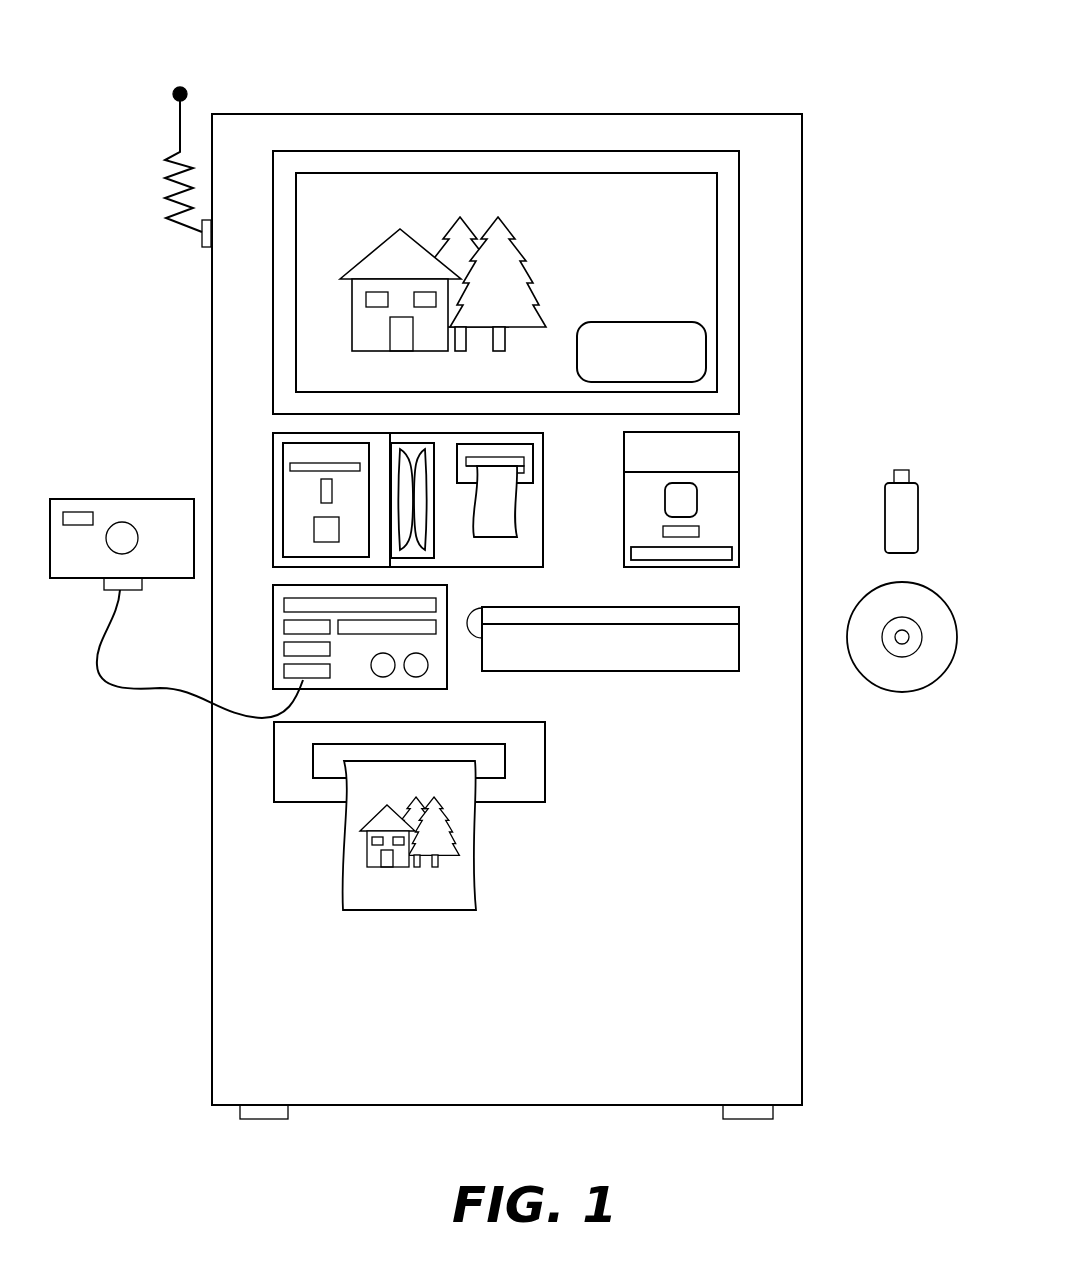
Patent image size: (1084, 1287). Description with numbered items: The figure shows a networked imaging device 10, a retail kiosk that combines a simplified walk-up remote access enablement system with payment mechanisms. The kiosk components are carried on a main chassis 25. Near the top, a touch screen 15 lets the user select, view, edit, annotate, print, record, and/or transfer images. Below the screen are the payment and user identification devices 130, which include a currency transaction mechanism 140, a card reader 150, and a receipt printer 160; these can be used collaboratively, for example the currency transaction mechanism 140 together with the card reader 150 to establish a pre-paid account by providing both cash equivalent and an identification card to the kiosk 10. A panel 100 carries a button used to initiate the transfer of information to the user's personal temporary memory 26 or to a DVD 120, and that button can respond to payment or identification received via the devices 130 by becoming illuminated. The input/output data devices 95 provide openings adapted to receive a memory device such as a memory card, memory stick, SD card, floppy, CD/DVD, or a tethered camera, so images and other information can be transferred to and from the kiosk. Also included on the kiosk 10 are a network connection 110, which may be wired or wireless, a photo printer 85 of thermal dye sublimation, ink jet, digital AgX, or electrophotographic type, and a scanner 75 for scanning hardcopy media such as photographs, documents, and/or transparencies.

The networked imaging device 10 is at (826, 210).
The touch screen 15 is at (637, 192).
The main chassis 25 is at (742, 114).
The personal temporary memory 26 is at (901, 470).
The scanner 75 is at (720, 651).
The photo printer 85 is at (287, 762).
The input/output data devices 95 is at (278, 639).
The panel 100 is at (722, 527).
The network connection 110 is at (202, 234).
The DVD 120 is at (902, 675).
The payment and user identification devices 130 is at (278, 462).
The currency transaction mechanism 140 is at (296, 495).
The card reader 150 is at (405, 452).
The receipt printer 160 is at (520, 480).